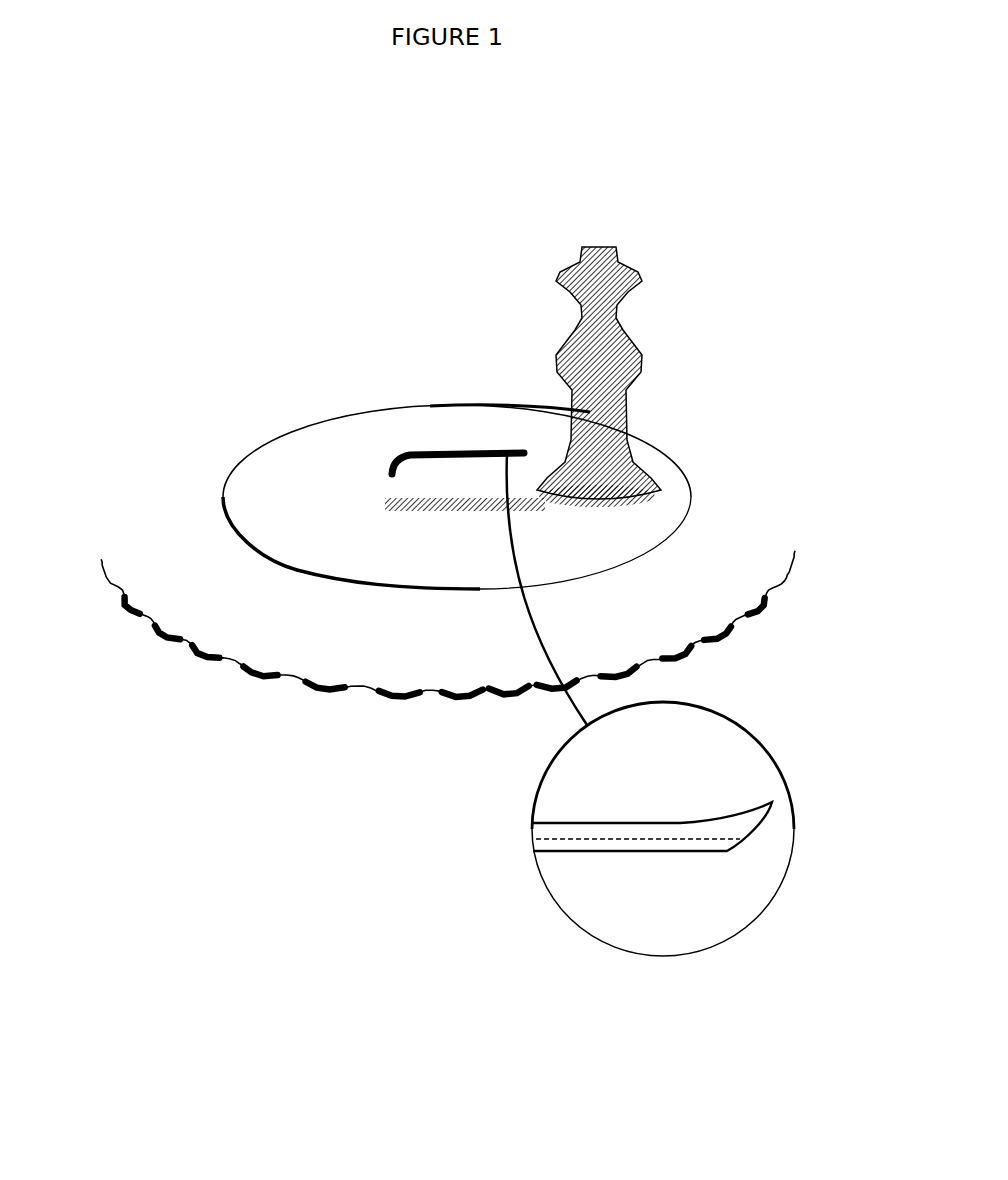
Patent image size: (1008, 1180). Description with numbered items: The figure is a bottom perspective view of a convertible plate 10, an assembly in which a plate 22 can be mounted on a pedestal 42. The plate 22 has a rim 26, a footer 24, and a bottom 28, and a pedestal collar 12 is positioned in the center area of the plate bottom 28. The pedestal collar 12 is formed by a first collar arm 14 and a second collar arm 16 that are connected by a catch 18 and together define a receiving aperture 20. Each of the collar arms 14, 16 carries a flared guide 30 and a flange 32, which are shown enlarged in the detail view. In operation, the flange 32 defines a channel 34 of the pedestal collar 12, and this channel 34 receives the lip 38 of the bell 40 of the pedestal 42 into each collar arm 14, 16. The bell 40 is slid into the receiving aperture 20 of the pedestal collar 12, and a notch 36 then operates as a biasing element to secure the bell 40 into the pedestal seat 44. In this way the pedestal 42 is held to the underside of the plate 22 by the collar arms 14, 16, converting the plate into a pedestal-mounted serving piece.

The convertible plate 10 is at (240, 293).
The pedestal collar 12 is at (408, 452).
The first collar arm 14 is at (464, 447).
The second collar arm 16 is at (465, 507).
The catch 18 is at (383, 477).
The receiving aperture 20 is at (496, 470).
The plate 22 is at (713, 487).
The footer 24 is at (660, 523).
The rim 26 is at (733, 596).
The plate bottom 28 is at (560, 560).
The flared guide 30 is at (747, 795).
The flange 32 is at (665, 850).
The channel 34 is at (727, 849).
The notch 36 is at (598, 835).
The lip 38 is at (633, 493).
The bell 40 is at (614, 460).
The pedestal 42 is at (605, 373).
The pedestal seat 44 is at (457, 478).